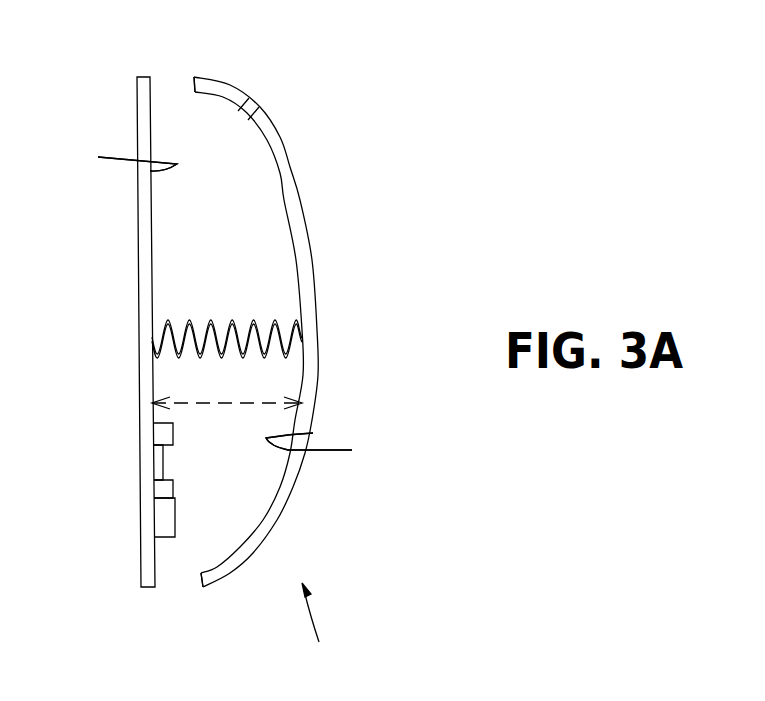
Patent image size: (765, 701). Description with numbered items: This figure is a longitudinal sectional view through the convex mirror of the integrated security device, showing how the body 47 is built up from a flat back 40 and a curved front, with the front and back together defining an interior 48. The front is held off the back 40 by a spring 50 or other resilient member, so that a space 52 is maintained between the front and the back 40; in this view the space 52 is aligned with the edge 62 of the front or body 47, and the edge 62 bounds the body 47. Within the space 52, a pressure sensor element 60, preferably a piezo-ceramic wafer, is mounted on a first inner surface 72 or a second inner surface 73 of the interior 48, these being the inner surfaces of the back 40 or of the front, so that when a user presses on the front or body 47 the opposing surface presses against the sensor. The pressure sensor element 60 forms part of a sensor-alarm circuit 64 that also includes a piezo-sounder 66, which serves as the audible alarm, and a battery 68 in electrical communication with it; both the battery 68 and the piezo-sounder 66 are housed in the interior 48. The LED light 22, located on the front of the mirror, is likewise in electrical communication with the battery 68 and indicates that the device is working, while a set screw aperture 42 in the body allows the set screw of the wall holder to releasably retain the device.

The light 22 is at (262, 108).
The back 40 is at (145, 245).
The set screw aperture 42 is at (305, 222).
The body 47 is at (320, 628).
The interior 48 is at (203, 115).
The spring 50 is at (302, 338).
The space 52 is at (170, 82).
The pressure sensor element 60 is at (130, 518).
The edge 62 is at (200, 587).
The sensor-alarm circuit 64 is at (94, 482).
The piezo-sounder 66 is at (165, 489).
The battery 68 is at (165, 434).
The first inner surface 72 is at (225, 305).
The second inner surface 73 is at (225, 303).